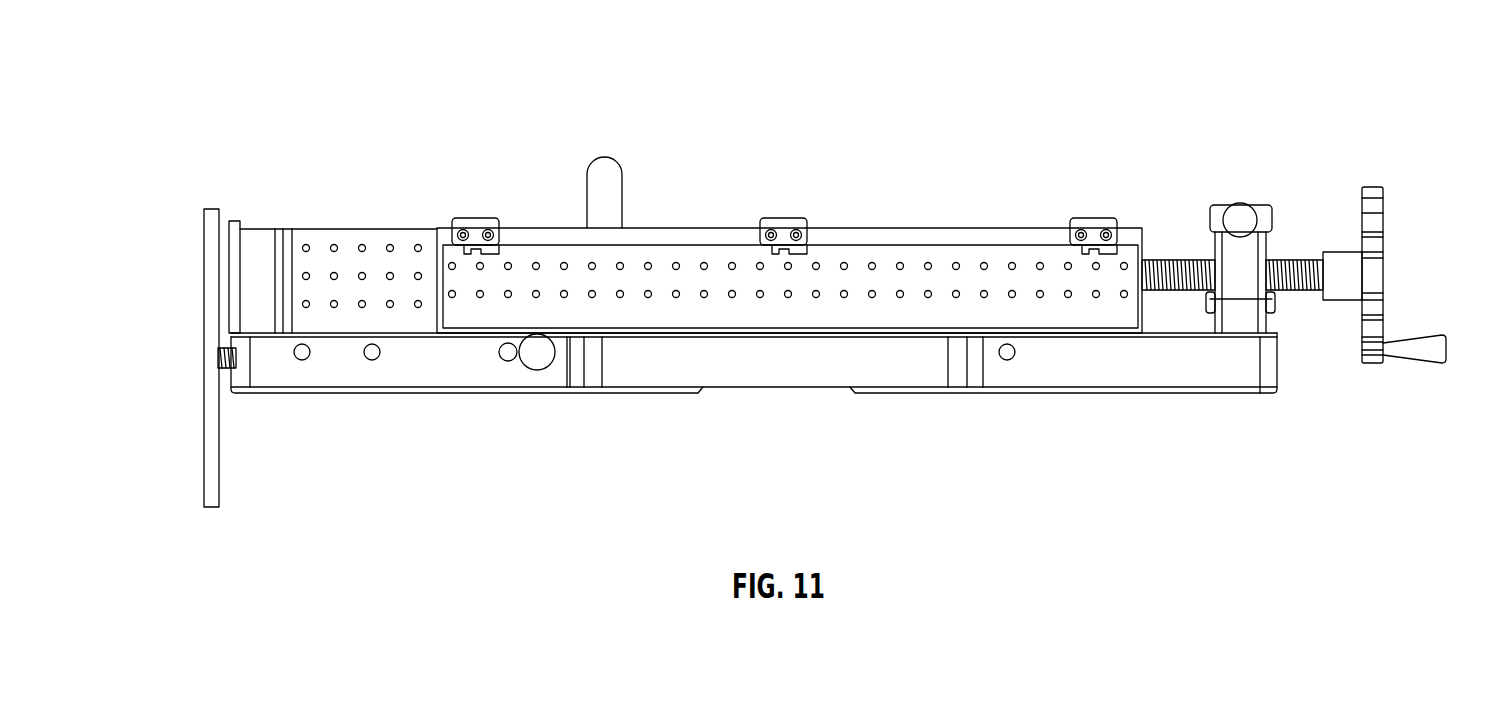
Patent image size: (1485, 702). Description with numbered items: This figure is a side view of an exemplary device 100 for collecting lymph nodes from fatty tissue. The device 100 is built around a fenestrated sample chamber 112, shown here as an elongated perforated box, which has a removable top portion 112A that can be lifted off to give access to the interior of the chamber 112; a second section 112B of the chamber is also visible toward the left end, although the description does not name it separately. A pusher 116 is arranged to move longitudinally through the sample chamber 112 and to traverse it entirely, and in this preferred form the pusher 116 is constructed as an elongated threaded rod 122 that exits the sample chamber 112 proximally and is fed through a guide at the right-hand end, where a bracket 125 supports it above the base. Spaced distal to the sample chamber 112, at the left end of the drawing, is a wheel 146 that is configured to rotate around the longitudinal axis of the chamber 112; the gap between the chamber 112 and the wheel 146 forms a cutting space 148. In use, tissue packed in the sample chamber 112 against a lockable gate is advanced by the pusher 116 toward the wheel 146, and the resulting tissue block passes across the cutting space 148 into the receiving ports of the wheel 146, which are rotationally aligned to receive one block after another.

The device 100 is at (1151, 53).
The sample chamber 112 is at (840, 204).
The removable top portion 112A is at (898, 232).
The second tray section 112B is at (347, 237).
The pusher 116 is at (1303, 213).
The threaded rod 122 is at (1158, 258).
The bearing bracket 125 is at (1237, 203).
The wheel 146 is at (203, 248).
The cutting space 148 is at (226, 213).